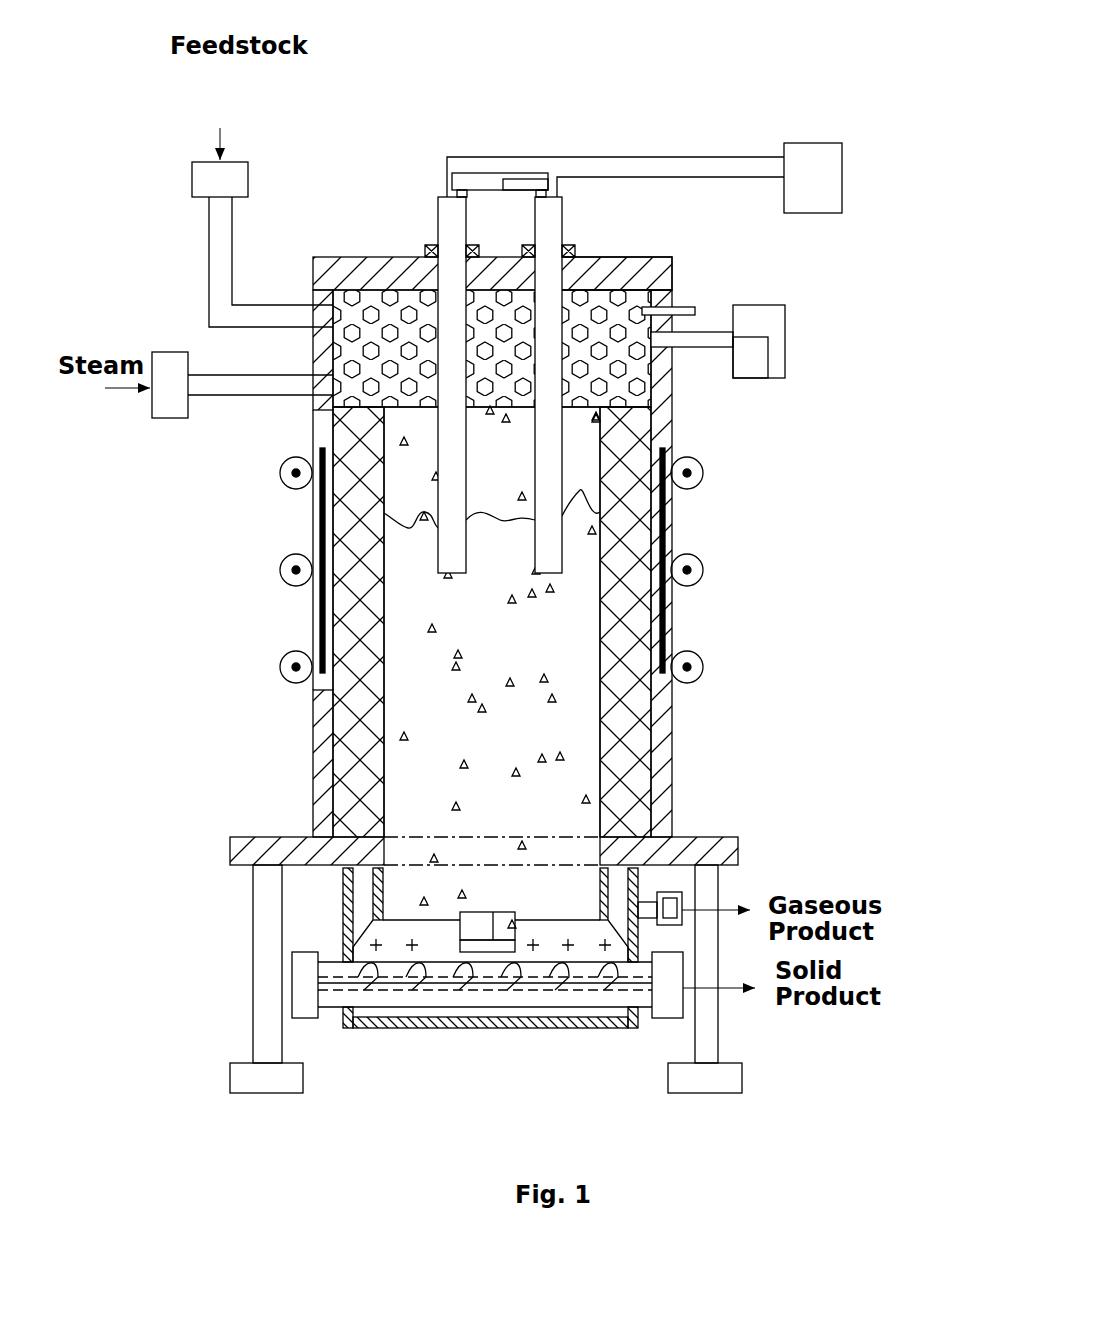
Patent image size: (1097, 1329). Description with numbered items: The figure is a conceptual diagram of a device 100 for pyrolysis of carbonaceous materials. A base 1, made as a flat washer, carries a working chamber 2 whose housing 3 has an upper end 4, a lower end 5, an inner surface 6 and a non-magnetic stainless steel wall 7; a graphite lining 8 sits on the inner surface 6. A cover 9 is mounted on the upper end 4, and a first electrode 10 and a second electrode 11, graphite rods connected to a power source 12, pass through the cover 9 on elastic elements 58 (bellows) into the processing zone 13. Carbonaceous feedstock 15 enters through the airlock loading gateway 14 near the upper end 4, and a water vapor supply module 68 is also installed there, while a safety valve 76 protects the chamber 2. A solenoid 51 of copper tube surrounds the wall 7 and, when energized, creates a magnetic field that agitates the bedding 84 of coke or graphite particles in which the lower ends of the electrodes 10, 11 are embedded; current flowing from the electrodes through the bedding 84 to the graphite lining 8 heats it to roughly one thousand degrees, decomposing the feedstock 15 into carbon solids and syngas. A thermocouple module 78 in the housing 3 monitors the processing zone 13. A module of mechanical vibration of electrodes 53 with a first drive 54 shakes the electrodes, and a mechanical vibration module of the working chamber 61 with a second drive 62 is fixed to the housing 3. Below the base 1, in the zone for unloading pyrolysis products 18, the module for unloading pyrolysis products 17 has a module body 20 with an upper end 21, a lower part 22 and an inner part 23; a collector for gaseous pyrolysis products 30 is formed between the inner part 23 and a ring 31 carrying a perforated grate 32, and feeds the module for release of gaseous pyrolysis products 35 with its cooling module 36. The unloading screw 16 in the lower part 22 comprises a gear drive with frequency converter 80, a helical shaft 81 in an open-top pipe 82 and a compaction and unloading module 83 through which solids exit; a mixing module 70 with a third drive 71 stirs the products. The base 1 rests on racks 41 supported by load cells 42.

The device for pyrolysis of carbonaceous materials 100 is at (748, 128).
The base 1 is at (707, 854).
The working chamber 2 is at (315, 255).
The housing 3 is at (662, 697).
The upper end of housing 4 is at (625, 290).
The lower end of housing 5 is at (313, 848).
The inner surface of housing 6 is at (623, 628).
The non-magnetic wall 7 is at (675, 522).
The graphite lining 8 is at (362, 645).
The cover 9 is at (338, 255).
The first electrode 10 is at (549, 452).
The second electrode 11 is at (450, 537).
The power source 12 is at (842, 173).
The processing zone 13 is at (573, 500).
The loading gateway 14 is at (220, 183).
The carbonaceous feedstock 15 is at (390, 335).
The unloading screw 16 is at (623, 982).
The module for unloading pyrolysis products 17 is at (342, 882).
The zone for unloading pyrolysis products 18 is at (467, 980).
The module body 20 is at (345, 910).
The upper end of module body 21 is at (620, 892).
The lower part of module body 22 is at (540, 937).
The inner part of module body 23 is at (612, 962).
The collector for collecting gaseous pyrolysis products 30 is at (643, 857).
The ring 31 is at (615, 872).
The grate 32 is at (672, 909).
The module for release of gaseous pyrolysis products 35 is at (683, 887).
The cooling module 36 is at (710, 905).
The racks 41 is at (790, 885).
The load cells 42 is at (718, 1082).
The solenoid 51 is at (290, 665).
The module of mechanical vibration of electrodes 53 is at (483, 170).
The first drive 54 is at (537, 183).
The elastic elements 58 is at (578, 250).
The mechanical vibration module of working chamber 61 is at (787, 357).
The second drive 62 is at (753, 353).
The water vapor supply module 68 is at (177, 380).
The mixing module 70 is at (445, 1028).
The third drive 71 is at (472, 924).
The safety valve 76 is at (673, 311).
The thermocouple module 78 is at (318, 553).
The gear drive with frequency converter 80 is at (305, 985).
The helical shaft 81 is at (637, 1028).
The open-top pipe 82 is at (525, 1000).
The compaction and unloading module 83 is at (668, 1006).
The bedding 84 is at (510, 528).